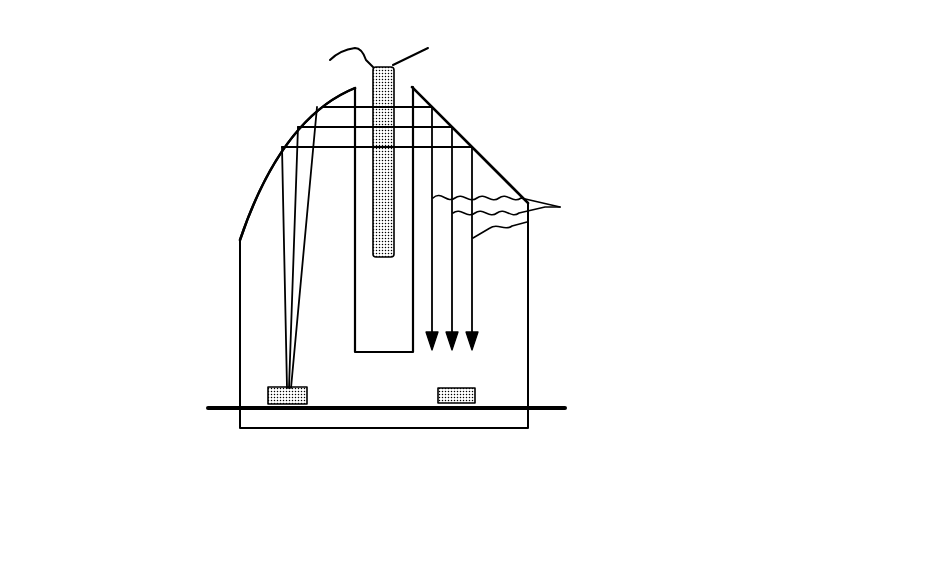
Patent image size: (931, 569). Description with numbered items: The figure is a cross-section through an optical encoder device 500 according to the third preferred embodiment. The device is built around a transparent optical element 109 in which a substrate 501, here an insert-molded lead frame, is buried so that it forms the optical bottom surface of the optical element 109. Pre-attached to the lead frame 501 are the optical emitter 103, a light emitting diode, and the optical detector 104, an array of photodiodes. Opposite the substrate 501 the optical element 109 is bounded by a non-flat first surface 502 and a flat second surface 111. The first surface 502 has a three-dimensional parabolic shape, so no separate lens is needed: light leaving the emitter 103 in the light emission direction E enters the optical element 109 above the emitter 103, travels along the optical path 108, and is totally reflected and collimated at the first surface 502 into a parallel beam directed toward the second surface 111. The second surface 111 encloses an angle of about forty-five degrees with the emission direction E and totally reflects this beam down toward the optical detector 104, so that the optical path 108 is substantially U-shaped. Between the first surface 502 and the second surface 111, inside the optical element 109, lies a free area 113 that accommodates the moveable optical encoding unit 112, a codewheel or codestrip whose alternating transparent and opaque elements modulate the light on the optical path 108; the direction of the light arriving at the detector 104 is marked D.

The optical encoder device 500 is at (612, 67).
The optical element 109 is at (260, 268).
The first surface 502 is at (270, 158).
The second surface 111 is at (497, 168).
The optical encoding unit 112 is at (383, 128).
The free area 113 is at (388, 293).
The optical emitter 103 is at (277, 405).
The optical detector 104 is at (477, 410).
The optical path 108 is at (531, 215).
The substrate 501 is at (363, 410).
The light emission direction E is at (277, 342).
The detected light beam D is at (480, 334).